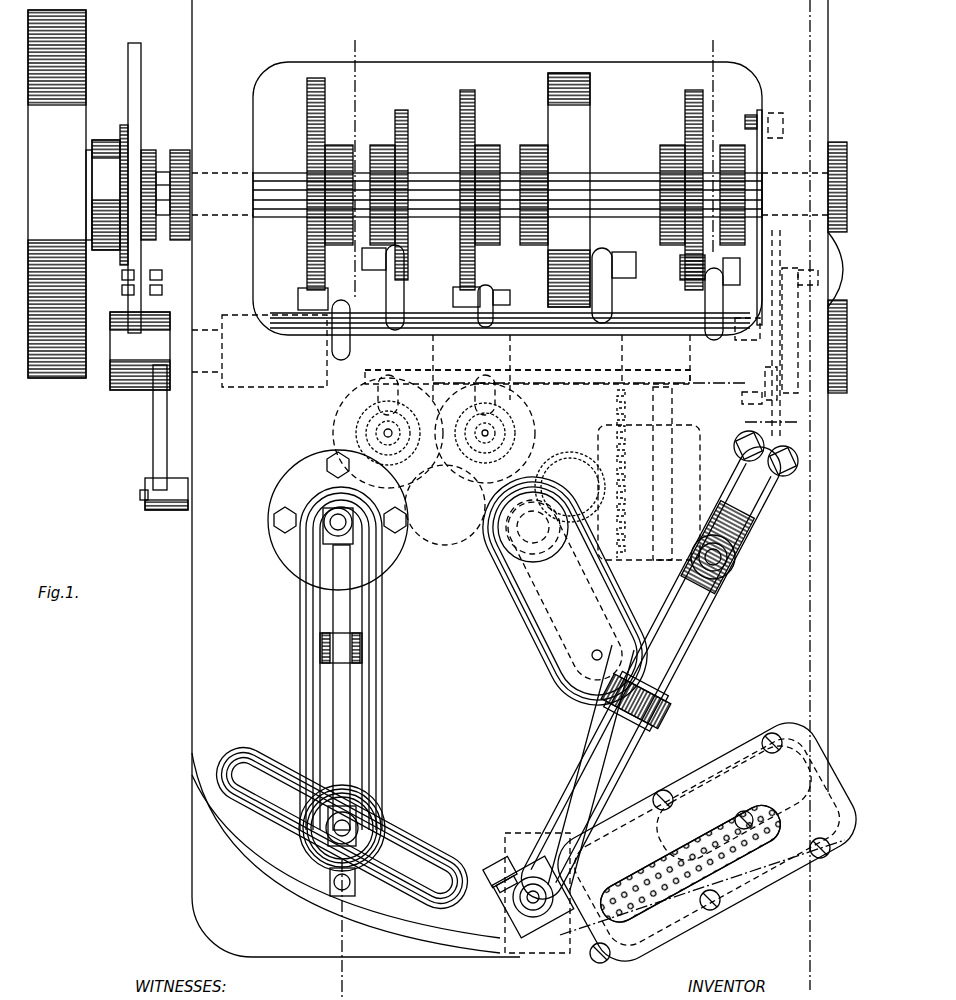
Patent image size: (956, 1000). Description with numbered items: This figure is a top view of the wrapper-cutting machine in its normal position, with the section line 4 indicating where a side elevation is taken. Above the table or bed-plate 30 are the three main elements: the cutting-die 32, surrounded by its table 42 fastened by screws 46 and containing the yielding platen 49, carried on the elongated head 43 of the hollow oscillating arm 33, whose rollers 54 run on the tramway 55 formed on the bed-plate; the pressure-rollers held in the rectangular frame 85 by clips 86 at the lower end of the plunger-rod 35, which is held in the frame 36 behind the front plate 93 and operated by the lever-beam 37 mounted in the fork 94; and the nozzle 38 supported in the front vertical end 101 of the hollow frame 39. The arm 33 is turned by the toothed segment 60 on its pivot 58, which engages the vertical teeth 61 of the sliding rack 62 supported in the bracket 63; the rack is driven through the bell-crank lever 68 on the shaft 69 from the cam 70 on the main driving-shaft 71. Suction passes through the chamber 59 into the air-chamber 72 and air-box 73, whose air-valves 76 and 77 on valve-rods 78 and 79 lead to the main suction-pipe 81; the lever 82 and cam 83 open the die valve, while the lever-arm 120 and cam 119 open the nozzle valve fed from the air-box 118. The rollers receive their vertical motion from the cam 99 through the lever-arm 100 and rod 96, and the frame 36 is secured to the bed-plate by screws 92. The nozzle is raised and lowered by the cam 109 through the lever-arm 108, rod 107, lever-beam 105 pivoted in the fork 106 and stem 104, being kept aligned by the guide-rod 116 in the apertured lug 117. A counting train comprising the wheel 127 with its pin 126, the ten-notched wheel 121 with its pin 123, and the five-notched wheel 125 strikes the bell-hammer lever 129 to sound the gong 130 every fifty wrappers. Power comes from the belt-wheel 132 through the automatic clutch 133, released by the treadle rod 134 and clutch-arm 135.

The section line 4 is at (802, 970).
The table or bed-plate 30 is at (452, 635).
The cutting-die 32 is at (690, 864).
The oscillating arm 33 is at (603, 685).
The plunger-rod 35 is at (513, 907).
The frame 36 is at (574, 786).
The lever-beam 37 is at (607, 748).
The nozzle 38 is at (405, 834).
The hollow frame or arm 39 is at (401, 733).
The table 42 is at (734, 803).
The head 43 is at (756, 745).
The screws 46 is at (782, 746).
The platen 49 is at (710, 847).
The rollers 54 is at (624, 938).
The tramway 55 is at (392, 924).
The pivot 58 is at (520, 552).
The chamber 59 is at (514, 534).
The toothed segment 60 is at (570, 452).
The vertical teeth 61 is at (615, 408).
The sliding rack 62 is at (651, 473).
The bracket 63 is at (649, 492).
The bell-crank lever 68 is at (608, 305).
The shaft 69 is at (213, 368).
The cam 70 is at (590, 135).
The main driving-shaft 71 is at (280, 217).
The air-chamber 72 is at (333, 428).
The air-box 73 is at (356, 413).
The air-valve 76 is at (500, 422).
The air-valve 77 is at (412, 415).
The valve-rod 78 is at (484, 449).
The valve-rod 79 is at (392, 441).
The main suction-pipe 81 is at (432, 527).
The lever 82 is at (486, 285).
The cam 83 is at (504, 190).
The rectangular frame 85 is at (512, 836).
The clips 86 is at (542, 950).
The screws 92 is at (792, 461).
The front plate 93 is at (492, 866).
The fork 94 is at (662, 703).
The rod 96 is at (735, 566).
The cam 99 is at (685, 100).
The lever-arm 100 is at (705, 298).
The front vertical end 101 is at (375, 808).
The stem 104 is at (330, 838).
The lever-beam 105 is at (338, 700).
The fork 106 is at (362, 640).
The rod 107 is at (330, 528).
The lever-arm 108 is at (336, 322).
The cam 109 is at (307, 115).
The guide-rod 116 is at (335, 896).
The apertured lug 117 is at (346, 897).
The air-box 118 is at (322, 484).
The cam 119 is at (405, 195).
The lever-arm 120 is at (412, 290).
The disk or wheel 121 is at (748, 330).
The pin 123 is at (768, 394).
The disk or wheel 125 is at (775, 412).
The pin 126 is at (750, 115).
The wheel 127 is at (765, 112).
The bell-hammer lever 129 is at (790, 328).
The gong 130 is at (828, 252).
The belt-wheel 132 is at (57, 194).
The automatic clutch 133 is at (104, 140).
The rod 134 is at (178, 510).
The clutch-arm 135 is at (153, 427).